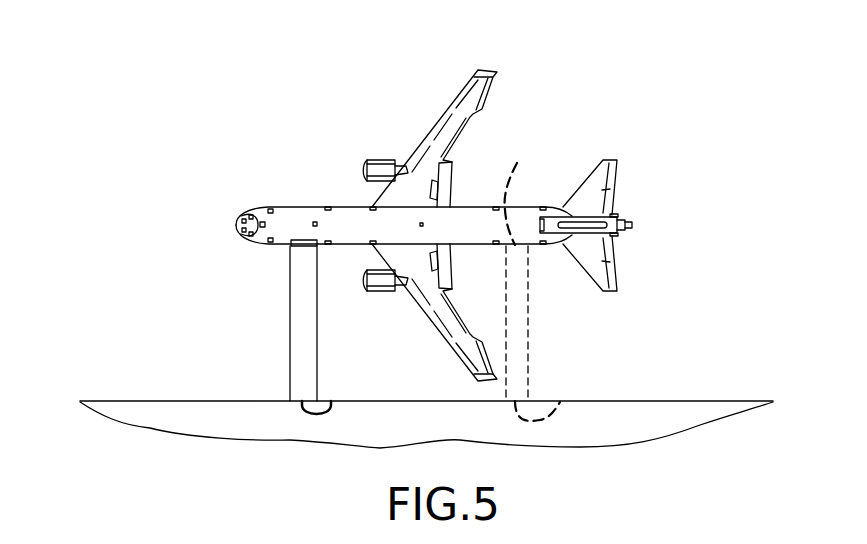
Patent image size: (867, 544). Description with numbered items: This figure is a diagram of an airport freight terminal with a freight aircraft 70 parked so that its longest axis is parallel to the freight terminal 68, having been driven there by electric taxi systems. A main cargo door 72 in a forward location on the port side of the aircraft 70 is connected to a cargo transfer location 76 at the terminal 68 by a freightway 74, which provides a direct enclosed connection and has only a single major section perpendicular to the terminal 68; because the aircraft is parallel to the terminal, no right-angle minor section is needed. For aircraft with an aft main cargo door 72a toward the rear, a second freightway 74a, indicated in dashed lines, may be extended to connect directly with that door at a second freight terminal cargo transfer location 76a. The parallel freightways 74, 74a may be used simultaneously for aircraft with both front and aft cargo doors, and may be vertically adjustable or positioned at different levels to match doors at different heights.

The aircraft 70 is at (613, 101).
The main cargo door 72 is at (302, 238).
The aft main cargo door 72a is at (526, 188).
The freightway 74 is at (302, 316).
The freightway 74a is at (520, 311).
The cargo transfer location 76 is at (331, 400).
The freight terminal cargo transfer location 76a is at (540, 420).
The freight terminal 68 is at (172, 421).